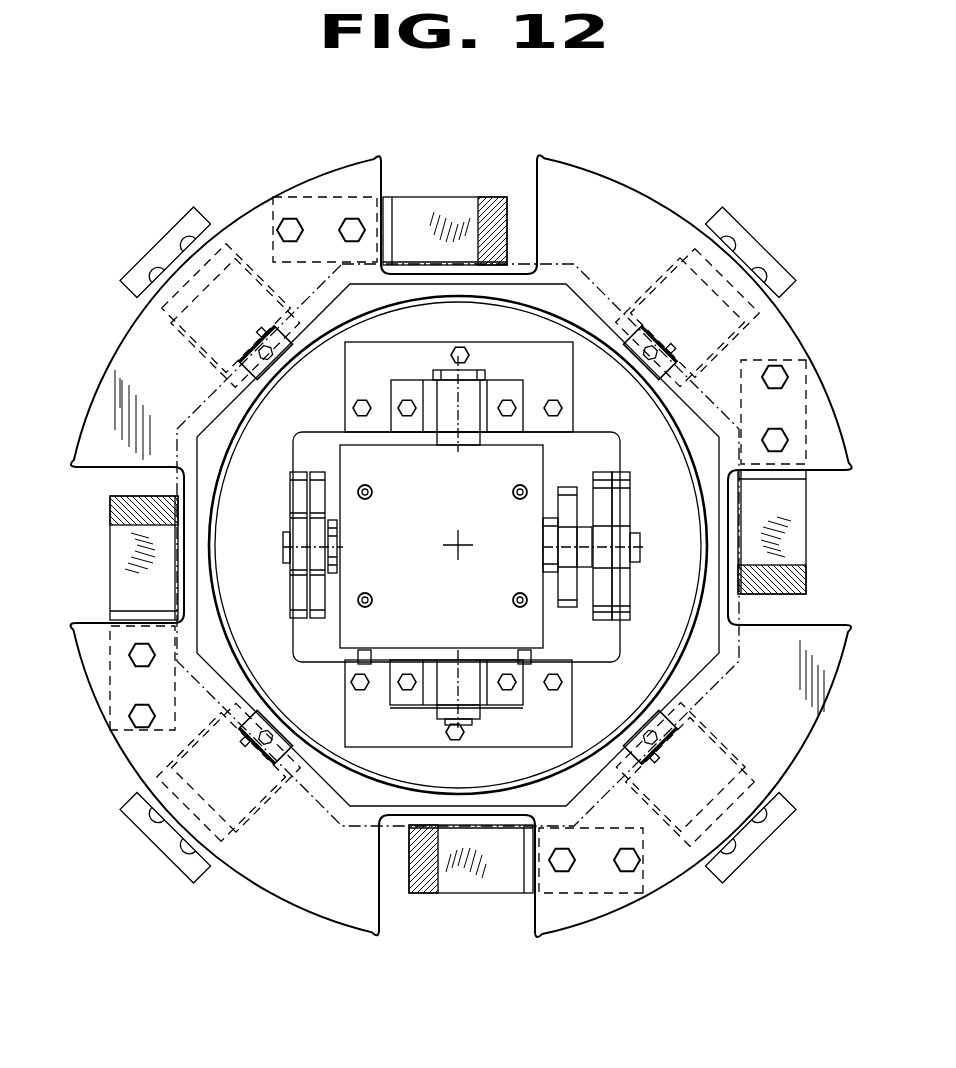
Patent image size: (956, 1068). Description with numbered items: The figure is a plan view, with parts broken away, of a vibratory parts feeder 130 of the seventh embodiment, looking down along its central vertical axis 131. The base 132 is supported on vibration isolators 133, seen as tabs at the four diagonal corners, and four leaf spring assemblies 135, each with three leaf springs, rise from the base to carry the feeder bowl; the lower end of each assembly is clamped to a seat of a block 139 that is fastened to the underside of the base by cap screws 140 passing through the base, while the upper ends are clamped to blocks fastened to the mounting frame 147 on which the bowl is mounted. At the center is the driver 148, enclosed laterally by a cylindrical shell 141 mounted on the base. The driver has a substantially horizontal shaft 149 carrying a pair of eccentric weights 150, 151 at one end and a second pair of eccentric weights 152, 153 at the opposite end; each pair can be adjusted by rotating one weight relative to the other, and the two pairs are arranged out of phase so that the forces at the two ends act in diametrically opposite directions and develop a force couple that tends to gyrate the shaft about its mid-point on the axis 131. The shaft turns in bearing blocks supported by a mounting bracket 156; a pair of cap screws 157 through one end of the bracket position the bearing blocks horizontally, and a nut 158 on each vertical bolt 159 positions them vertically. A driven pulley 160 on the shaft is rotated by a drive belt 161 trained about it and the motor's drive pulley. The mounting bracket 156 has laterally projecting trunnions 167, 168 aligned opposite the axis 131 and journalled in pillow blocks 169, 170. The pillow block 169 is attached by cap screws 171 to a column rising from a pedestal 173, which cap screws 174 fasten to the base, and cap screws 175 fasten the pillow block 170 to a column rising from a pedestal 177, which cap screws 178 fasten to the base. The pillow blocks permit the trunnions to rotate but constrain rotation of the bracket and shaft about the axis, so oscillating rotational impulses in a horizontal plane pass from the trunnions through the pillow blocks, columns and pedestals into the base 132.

The vibratory parts feeder 130 is at (616, 128).
The central vertical axis 131 is at (452, 545).
The base 132 is at (122, 328).
The vibration isolators 133 is at (222, 222).
The leaf spring assemblies 135 is at (443, 200).
The block 139 is at (292, 196).
The cap screws 140 is at (352, 226).
The cylindrical shell 141 is at (226, 412).
The mounting frame 147 is at (574, 264).
The driver 148 is at (598, 633).
The shaft 149 is at (640, 549).
The eccentric weight 150 is at (292, 494).
The eccentric weight 151 is at (318, 590).
The eccentric weight 152 is at (604, 474).
The eccentric weight 153 is at (622, 614).
The mounting bracket 156 is at (404, 566).
The cap screws 157 is at (364, 652).
The nut 158 is at (514, 492).
The bolt 159 is at (514, 496).
The driven pulley 160 is at (580, 468).
The drive belt 161 is at (572, 600).
The trunnion 167 is at (460, 444).
The trunnion 168 is at (437, 660).
The pillow block 169 is at (478, 394).
The pillow block 170 is at (490, 660).
The cap screws 171 is at (407, 400).
The pedestal 173 is at (522, 346).
The cap screws 174 is at (460, 347).
The cap screws 175 is at (398, 692).
The pedestal 177 is at (500, 748).
The cap screws 178 is at (352, 682).